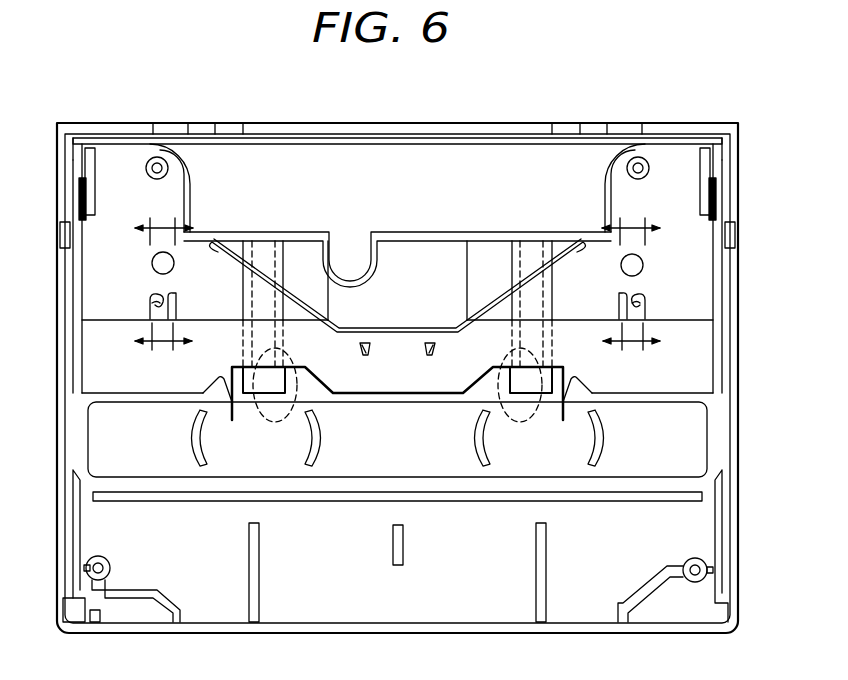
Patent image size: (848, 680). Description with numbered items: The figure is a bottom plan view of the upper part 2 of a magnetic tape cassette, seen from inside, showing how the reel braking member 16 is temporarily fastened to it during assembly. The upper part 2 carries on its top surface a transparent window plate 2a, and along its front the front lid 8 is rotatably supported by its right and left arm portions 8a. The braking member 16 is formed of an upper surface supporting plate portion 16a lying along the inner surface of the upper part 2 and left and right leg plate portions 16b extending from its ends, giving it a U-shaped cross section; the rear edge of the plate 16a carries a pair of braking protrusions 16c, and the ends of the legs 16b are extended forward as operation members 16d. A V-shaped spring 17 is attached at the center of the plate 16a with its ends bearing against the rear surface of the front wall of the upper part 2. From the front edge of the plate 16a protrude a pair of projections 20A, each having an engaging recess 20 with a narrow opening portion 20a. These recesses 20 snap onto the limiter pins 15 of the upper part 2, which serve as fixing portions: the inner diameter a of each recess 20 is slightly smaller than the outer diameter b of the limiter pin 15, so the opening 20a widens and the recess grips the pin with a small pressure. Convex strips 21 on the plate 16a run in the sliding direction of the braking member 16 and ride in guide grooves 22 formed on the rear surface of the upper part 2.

The upper part 2 is at (235, 633).
The transparent window plate 2a is at (698, 455).
The front lid 8 is at (403, 122).
The arm portions 8a is at (66, 158).
The limiter pins 15 is at (152, 264).
The reel braking member 16 is at (436, 395).
The upper surface supporting plate portion 16a is at (375, 382).
The leg plate portions 16b is at (78, 342).
The braking protrusions 16c is at (230, 412).
The operation members 16d is at (77, 190).
The spring 17 is at (487, 292).
The engaging recesses 20 is at (150, 306).
The narrow opening portion 20a is at (172, 294).
The projections 20A is at (150, 298).
The convex strips 21 is at (268, 395).
The guide grooves 22 is at (242, 298).
The inner diameter of the recess a is at (163, 344).
The outer diameter of the limiter pin b is at (164, 228).